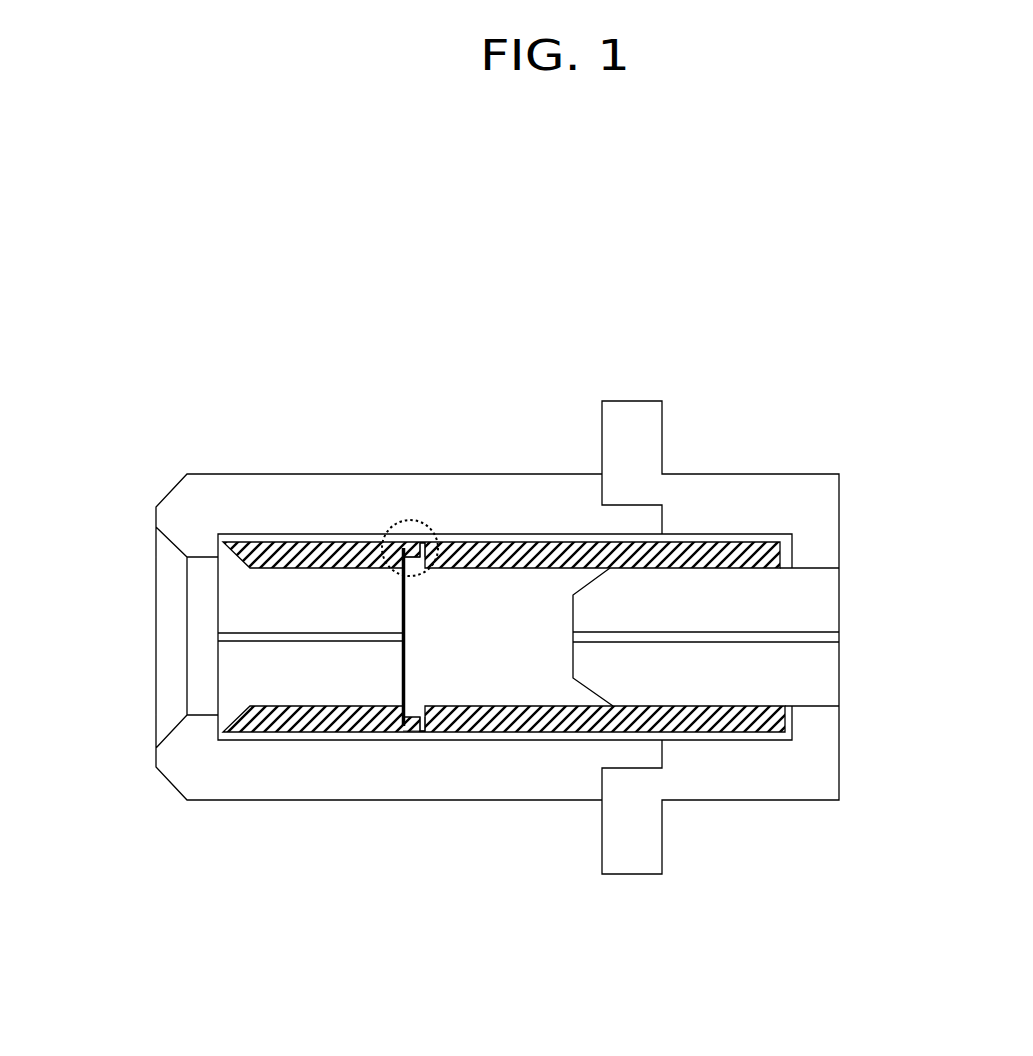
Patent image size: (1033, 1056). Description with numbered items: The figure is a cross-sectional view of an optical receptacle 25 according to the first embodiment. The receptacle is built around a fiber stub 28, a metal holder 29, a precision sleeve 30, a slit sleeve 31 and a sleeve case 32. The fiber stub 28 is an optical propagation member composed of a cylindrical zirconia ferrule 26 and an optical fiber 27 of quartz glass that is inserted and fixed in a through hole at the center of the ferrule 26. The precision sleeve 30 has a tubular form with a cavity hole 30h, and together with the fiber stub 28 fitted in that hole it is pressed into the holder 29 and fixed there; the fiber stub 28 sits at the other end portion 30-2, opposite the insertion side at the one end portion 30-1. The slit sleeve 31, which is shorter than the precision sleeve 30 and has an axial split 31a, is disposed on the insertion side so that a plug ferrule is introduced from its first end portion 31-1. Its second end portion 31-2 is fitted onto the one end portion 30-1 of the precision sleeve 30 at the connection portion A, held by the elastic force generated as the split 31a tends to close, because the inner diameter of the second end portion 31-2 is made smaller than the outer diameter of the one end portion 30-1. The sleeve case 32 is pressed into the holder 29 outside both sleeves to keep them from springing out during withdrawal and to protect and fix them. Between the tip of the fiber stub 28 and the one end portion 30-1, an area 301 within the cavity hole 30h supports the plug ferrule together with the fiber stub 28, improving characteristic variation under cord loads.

The optical receptacle 25 is at (552, 470).
The ferrule 26 is at (765, 660).
The optical fiber 27 is at (658, 642).
The fiber stub 28 is at (565, 614).
The holder 29 is at (705, 510).
The precision sleeve 30 is at (543, 727).
The cavity hole 30h is at (458, 587).
The one end portion 30-1 is at (426, 701).
The other end portion 30-2 is at (752, 733).
The area for supporting the plug ferrule 301 is at (408, 692).
The slit sleeve 31 is at (308, 728).
The split 31a is at (247, 640).
The first end portion 31-1 is at (258, 681).
The second end portion 31-2 is at (407, 730).
The sleeve case 32 is at (200, 773).
The connection portion A is at (392, 524).